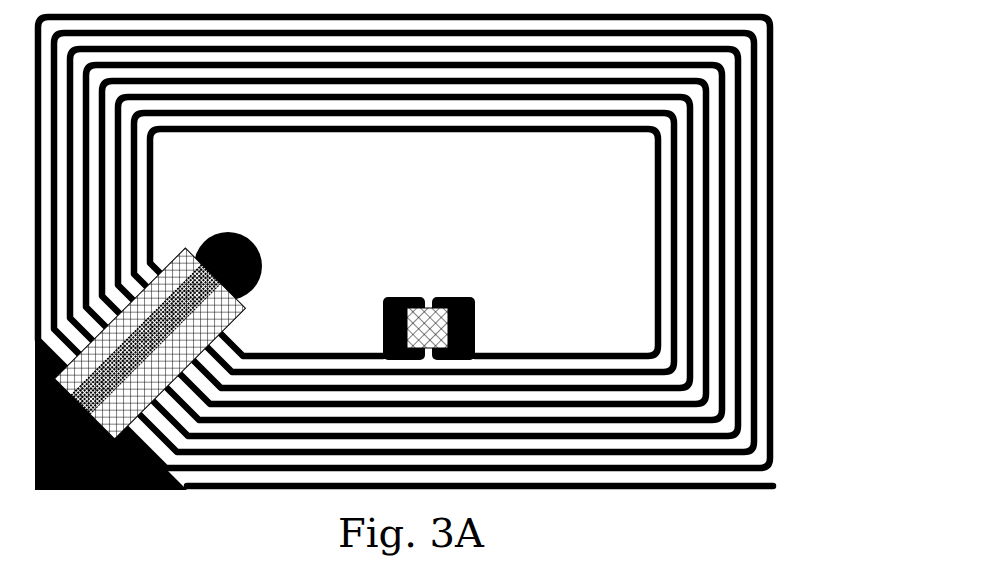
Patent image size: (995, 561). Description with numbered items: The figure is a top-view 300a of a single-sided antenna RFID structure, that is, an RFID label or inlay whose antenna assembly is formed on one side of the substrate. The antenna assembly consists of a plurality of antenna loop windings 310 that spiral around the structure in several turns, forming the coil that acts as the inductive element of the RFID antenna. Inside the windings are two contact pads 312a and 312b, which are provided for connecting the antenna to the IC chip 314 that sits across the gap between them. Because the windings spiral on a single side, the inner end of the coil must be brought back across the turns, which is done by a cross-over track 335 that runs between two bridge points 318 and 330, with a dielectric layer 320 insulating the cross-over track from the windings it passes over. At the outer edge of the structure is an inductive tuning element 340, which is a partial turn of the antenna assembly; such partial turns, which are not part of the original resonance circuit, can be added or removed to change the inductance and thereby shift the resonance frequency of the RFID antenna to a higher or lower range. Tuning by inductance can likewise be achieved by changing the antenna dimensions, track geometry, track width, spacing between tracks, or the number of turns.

The top-view 300a is at (451, 277).
The antenna loop windings 310 is at (803, 202).
The contact pad 312a is at (390, 300).
The contact pad 312b is at (476, 320).
The IC chip 314 is at (427, 308).
The bridge point 318 is at (222, 232).
The dielectric layer 320 is at (246, 316).
The bridge point 330 is at (116, 491).
The cross-over track 335 is at (144, 341).
The inductive tuning element 340 is at (647, 489).